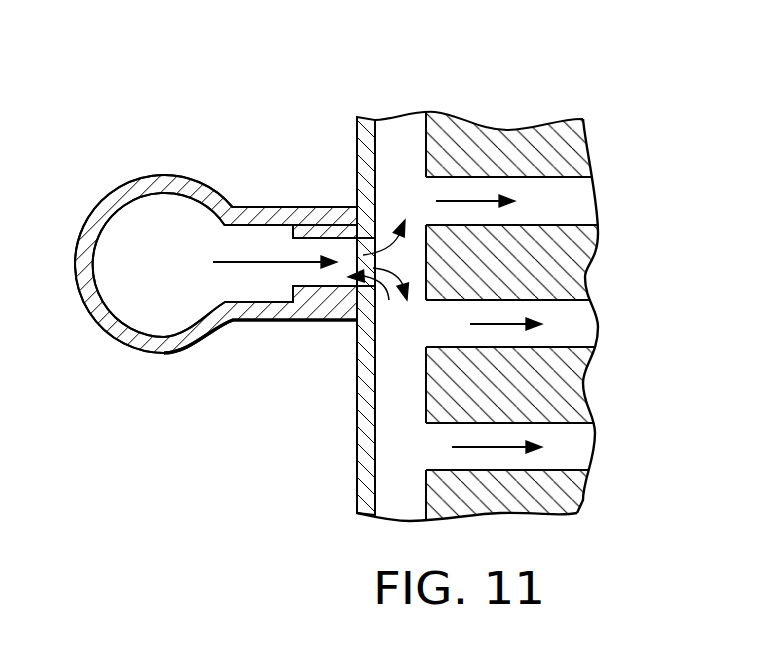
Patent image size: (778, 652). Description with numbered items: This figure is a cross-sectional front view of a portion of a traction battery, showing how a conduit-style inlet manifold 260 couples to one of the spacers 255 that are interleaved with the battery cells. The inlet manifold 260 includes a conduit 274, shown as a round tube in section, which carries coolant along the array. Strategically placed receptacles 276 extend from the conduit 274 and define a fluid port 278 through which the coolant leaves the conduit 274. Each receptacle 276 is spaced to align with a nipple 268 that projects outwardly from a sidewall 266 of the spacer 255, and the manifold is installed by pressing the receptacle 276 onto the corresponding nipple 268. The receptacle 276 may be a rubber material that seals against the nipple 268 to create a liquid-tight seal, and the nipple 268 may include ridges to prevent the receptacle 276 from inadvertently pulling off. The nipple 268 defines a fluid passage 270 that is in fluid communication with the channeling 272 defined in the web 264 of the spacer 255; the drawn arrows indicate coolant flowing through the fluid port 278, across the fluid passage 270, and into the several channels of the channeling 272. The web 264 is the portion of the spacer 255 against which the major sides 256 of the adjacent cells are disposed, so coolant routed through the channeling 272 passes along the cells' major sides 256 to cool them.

The spacer 255 is at (368, 133).
The major side 256 is at (418, 157).
The inlet manifold 260 is at (133, 153).
The web 264 is at (490, 133).
The sidewall 266 is at (357, 443).
The nipple 268 is at (330, 231).
The fluid passage 270 is at (389, 300).
The channeling 272 is at (556, 191).
The conduit 274 is at (178, 183).
The receptacle 276 is at (278, 310).
The fluid port 278 is at (255, 289).